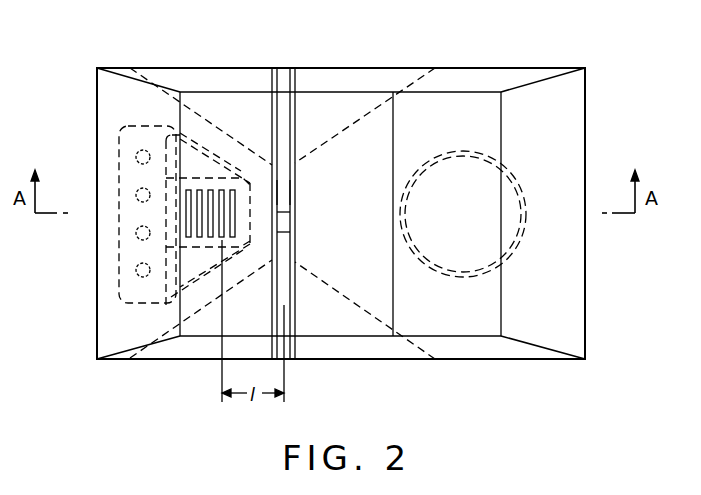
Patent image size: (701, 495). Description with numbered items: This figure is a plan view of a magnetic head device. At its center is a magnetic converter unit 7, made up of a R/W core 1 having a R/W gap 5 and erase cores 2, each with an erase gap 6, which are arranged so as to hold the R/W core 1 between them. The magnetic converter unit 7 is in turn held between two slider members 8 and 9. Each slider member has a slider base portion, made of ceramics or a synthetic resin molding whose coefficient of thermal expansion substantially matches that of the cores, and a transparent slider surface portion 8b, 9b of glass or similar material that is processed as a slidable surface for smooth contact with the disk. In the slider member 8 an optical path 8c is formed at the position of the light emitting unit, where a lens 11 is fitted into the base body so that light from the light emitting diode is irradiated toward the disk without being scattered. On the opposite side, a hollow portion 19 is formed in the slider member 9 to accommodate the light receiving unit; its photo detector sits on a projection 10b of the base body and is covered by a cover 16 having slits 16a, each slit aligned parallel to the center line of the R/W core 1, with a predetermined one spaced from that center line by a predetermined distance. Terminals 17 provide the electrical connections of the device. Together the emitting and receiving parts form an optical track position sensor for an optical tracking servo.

The R/W core 1 is at (287, 360).
The erase cores 2 is at (292, 66).
The R/W gap 5 is at (291, 216).
The erase gap 6 is at (291, 194).
The magnetic converter unit 7 is at (262, 56).
The slider member 8 is at (590, 139).
The slider surface portion 8b is at (514, 67).
The optical path 8c is at (510, 186).
The slider member 9 is at (90, 133).
The slider surface portion 9b is at (106, 93).
The projection 10b is at (216, 182).
The lens 11 is at (506, 244).
The cover 16 is at (200, 248).
The slits 16a is at (189, 238).
The terminals 17 is at (135, 159).
The hollow portion 19 is at (122, 252).